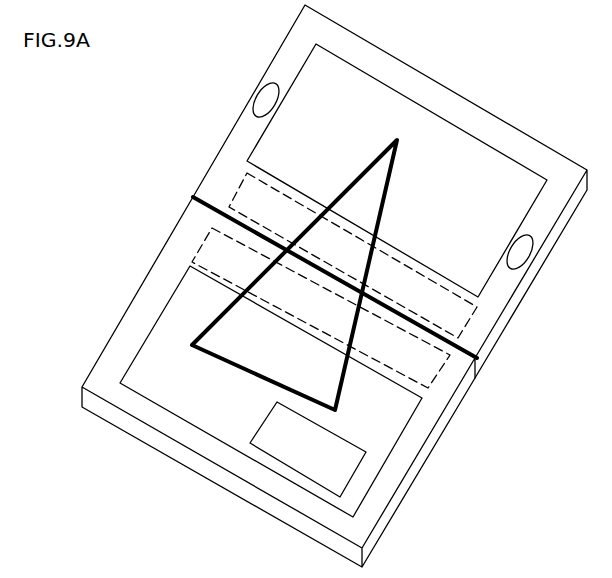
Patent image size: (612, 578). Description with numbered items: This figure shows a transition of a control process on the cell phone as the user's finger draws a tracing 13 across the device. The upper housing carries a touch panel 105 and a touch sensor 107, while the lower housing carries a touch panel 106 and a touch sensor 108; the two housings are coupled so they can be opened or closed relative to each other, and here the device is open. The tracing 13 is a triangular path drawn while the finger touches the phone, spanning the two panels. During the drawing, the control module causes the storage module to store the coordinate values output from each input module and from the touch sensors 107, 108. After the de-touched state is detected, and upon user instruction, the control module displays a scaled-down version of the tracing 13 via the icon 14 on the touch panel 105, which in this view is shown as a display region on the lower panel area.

The touch panel 105 is at (255, 141).
The touch panel 106 is at (160, 427).
The touch sensor 107 is at (237, 190).
The touch sensor 108 is at (210, 237).
The tracing 13 is at (160, 315).
The icon 14 is at (278, 475).